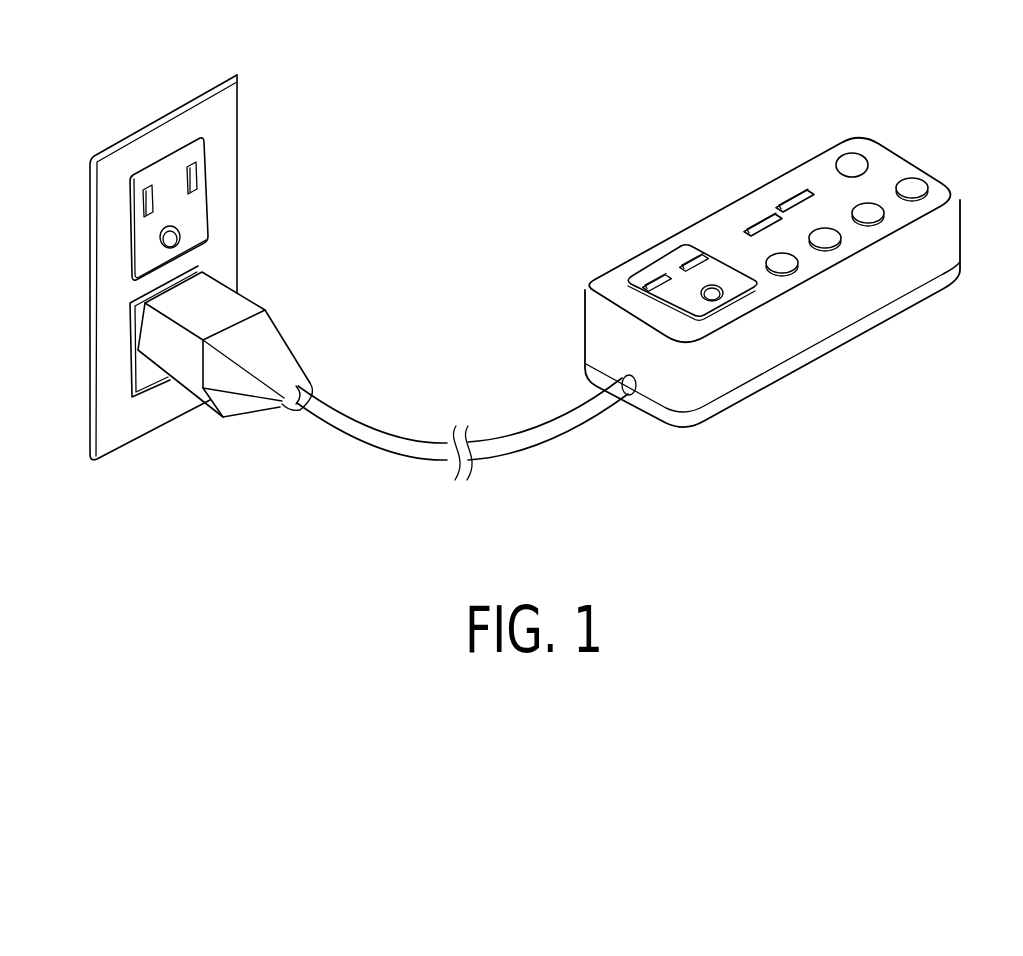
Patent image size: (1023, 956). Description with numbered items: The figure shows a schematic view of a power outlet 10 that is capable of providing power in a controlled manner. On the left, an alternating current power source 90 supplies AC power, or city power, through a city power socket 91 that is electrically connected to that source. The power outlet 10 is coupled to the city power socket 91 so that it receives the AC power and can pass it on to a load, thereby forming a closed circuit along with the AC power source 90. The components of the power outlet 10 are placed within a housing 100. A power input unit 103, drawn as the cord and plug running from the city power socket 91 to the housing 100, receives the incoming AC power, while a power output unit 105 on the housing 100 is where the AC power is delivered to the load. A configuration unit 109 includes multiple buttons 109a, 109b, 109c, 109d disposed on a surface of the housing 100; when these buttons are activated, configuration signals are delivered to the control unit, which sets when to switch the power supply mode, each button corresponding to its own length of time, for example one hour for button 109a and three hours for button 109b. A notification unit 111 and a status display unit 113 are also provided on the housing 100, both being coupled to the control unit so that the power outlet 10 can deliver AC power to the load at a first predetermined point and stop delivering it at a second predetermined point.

The power outlet 10 is at (747, 273).
The alternating current power source 90 is at (262, 178).
The city power socket 91 is at (207, 265).
The housing 100 is at (705, 387).
The power input unit 103 is at (522, 440).
The power output unit 105 is at (664, 270).
The configuration unit 109 is at (876, 312).
The button 109a is at (790, 268).
The button 109b is at (832, 243).
The button 109c is at (878, 220).
The button 109d is at (922, 194).
The notification unit 111 is at (850, 160).
The status display unit 113 is at (750, 217).